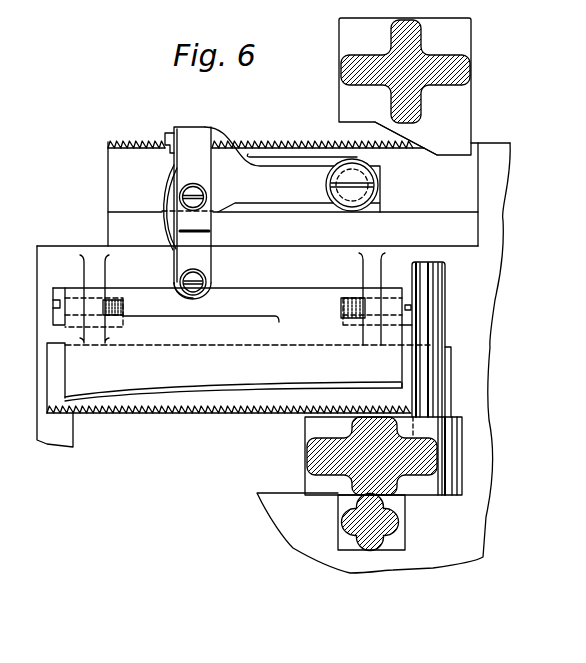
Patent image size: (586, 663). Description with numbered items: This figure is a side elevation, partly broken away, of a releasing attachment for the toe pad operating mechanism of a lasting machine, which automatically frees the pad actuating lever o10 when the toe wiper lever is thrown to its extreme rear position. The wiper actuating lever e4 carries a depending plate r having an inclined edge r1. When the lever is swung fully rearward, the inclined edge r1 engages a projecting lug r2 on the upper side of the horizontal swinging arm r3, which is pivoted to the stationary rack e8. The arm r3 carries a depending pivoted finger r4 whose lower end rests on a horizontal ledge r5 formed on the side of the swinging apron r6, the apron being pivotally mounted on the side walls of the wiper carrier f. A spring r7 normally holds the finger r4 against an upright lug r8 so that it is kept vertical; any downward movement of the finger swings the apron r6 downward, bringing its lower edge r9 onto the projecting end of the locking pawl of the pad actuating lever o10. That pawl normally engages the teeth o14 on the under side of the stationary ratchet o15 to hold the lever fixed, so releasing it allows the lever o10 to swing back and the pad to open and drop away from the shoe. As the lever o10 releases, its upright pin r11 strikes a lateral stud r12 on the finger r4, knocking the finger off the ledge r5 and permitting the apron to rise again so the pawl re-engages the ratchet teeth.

The wiper actuating lever e4 is at (470, 63).
The depending plate r is at (460, 120).
The inclined edge r1 is at (421, 153).
The projecting lug r2 is at (192, 132).
The horizontal swinging arm r3 is at (314, 169).
The depending pivoted finger r4 is at (200, 243).
The horizontal ledge r5 is at (152, 308).
The swinging apron r6 is at (215, 281).
The spring r7 is at (163, 220).
The upright lug r8 is at (215, 279).
The lower edge r9 is at (277, 400).
The pad actuating lever o10 is at (306, 463).
The upright pin r11 is at (440, 335).
The lateral stud r12 is at (178, 280).
The teeth o14 is at (217, 403).
The stationary ratchet o15 is at (173, 403).
The stationary rack e8 is at (122, 173).
The wiper carrier f is at (481, 272).